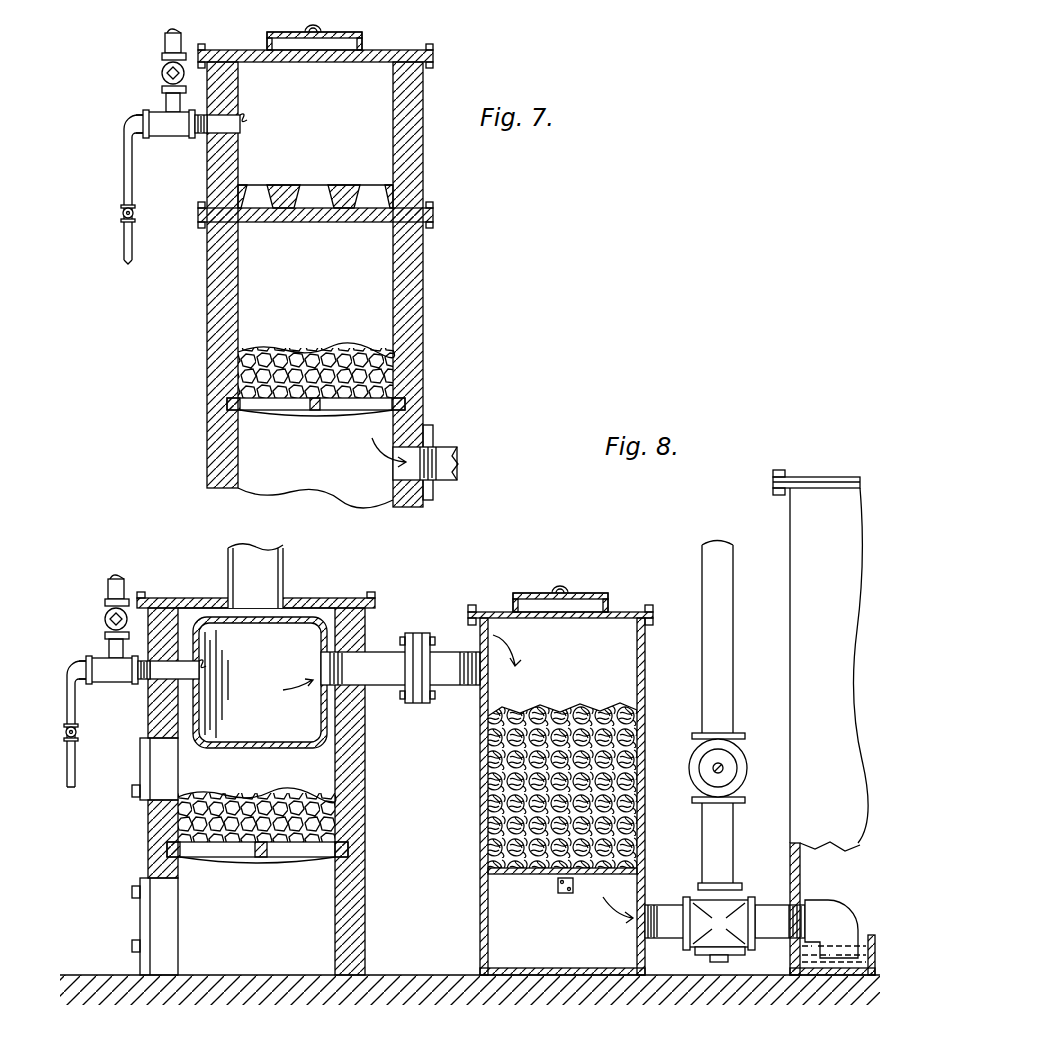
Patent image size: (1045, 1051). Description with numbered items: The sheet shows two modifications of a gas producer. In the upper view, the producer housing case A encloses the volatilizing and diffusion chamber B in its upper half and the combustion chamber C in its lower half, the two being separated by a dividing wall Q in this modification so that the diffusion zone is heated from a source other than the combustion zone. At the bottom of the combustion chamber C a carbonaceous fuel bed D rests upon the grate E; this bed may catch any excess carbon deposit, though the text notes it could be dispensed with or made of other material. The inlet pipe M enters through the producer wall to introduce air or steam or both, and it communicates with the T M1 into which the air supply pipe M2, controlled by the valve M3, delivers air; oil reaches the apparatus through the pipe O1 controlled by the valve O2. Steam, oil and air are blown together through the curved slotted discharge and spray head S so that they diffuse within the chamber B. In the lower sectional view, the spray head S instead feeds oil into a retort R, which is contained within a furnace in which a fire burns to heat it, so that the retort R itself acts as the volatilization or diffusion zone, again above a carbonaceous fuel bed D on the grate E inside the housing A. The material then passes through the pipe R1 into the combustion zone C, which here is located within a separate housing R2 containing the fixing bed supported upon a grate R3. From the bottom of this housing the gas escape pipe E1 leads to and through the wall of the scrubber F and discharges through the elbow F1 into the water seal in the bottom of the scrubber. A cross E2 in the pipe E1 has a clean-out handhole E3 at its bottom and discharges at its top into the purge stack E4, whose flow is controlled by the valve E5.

In FIG. 7, the producer housing case A is at (423, 293).
In FIG. 8, the producer housing case A is at (365, 824).
In FIG. 7, the volatilizing and diffusion chamber B is at (348, 137).
In FIG. 8, the volatilizing and diffusion chamber B is at (335, 750).
In FIG. 7, the combustion chamber C is at (346, 302).
In FIG. 8, the combustion chamber C is at (562, 751).
In FIG. 7, the carbonaceous fuel bed D is at (282, 360).
In FIG. 8, the carbonaceous fuel bed D is at (265, 805).
In FIG. 8, the grate E is at (240, 860).
In FIG. 8, the gas escape pipe E1 is at (665, 900).
In FIG. 8, the cross E2 is at (712, 928).
In FIG. 8, the clean-out handhole E3 is at (730, 960).
In FIG. 8, the purge stack E4 is at (733, 618).
In FIG. 8, the valve E5 is at (748, 762).
In FIG. 8, the scrubber F is at (792, 545).
In FIG. 8, the elbow F1 is at (832, 909).
In FIG. 7, the inlet pipe M is at (199, 138).
In FIG. 8, the inlet pipe M is at (141, 684).
In FIG. 7, the T M1 is at (166, 138).
In FIG. 8, the T M1 is at (112, 682).
In FIG. 7, the air supply pipe M2 is at (166, 43).
In FIG. 8, the air supply pipe M2 is at (109, 588).
In FIG. 7, the valve M3 is at (162, 73).
In FIG. 8, the valve M3 is at (105, 618).
In FIG. 7, the oil supply pipe O1 is at (124, 168).
In FIG. 8, the oil supply pipe O1 is at (76, 776).
In FIG. 7, the valve O2 is at (121, 213).
In FIG. 8, the valve O2 is at (80, 734).
In FIG. 7, the dividing wall Q is at (405, 200).
In FIG. 8, the retort R is at (288, 632).
In FIG. 8, the pipe R1 is at (382, 660).
In FIG. 8, the separate housing R2 is at (645, 688).
In FIG. 8, the grate R3 is at (535, 878).
In FIG. 7, the curved slotted discharge and spray head S is at (245, 118).
In FIG. 8, the curved slotted discharge and spray head S is at (205, 667).